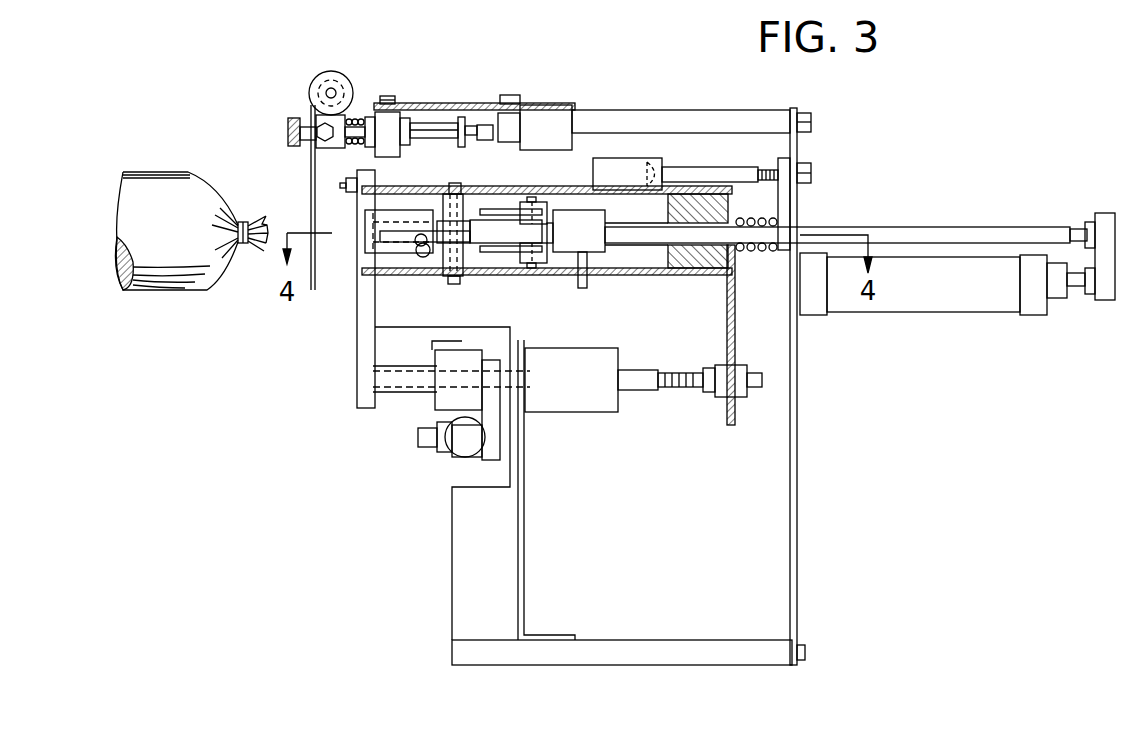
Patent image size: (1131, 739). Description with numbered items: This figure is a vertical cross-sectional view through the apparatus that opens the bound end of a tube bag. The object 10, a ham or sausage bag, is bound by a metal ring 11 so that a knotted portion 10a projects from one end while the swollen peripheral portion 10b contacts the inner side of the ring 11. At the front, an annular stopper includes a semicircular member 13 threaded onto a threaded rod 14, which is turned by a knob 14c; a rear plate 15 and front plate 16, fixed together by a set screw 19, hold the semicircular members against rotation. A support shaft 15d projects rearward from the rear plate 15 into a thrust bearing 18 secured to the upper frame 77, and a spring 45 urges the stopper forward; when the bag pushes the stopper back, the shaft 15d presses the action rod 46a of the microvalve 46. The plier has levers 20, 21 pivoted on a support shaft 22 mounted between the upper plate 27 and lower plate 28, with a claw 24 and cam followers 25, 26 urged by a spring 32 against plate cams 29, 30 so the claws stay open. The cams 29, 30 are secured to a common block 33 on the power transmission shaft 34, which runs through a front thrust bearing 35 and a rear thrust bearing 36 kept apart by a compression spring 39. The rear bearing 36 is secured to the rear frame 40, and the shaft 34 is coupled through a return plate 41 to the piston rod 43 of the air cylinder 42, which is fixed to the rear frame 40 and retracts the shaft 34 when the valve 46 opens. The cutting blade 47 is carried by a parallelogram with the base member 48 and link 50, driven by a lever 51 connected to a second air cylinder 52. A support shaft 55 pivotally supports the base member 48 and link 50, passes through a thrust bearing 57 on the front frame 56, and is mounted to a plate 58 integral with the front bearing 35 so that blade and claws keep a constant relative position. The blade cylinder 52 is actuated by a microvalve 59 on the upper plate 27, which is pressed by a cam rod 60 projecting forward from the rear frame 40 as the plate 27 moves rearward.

The object 10 is at (167, 188).
The knotted portion 10a is at (262, 218).
The peripheral portion 10b is at (210, 187).
The metal ring 11 is at (243, 243).
The semicircular member 13 is at (312, 290).
The threaded rod 14 is at (312, 88).
The knob 14c is at (331, 71).
The rear plate 15 is at (325, 148).
The support shaft 15d is at (432, 122).
The front plate 16 is at (310, 150).
The thrust bearing 18 is at (388, 157).
The set screw 19 is at (288, 130).
The lever 20 is at (473, 220).
The lever 21 is at (455, 276).
The support shaft 22 is at (457, 186).
The claw 24 is at (365, 240).
The cam follower 25 is at (543, 202).
The cam follower 26 is at (537, 268).
The upper plate 27 is at (425, 186).
The lower plate 28 is at (432, 276).
The plate cam 29 is at (507, 209).
The plate cam 30 is at (510, 252).
The spring 32 is at (415, 252).
The common block 33 is at (598, 252).
The power transmission shaft 34 is at (948, 227).
The front thrust bearing 35 is at (696, 262).
The rear thrust bearing 36 is at (790, 205).
The compression spring 39 is at (745, 250).
The rear frame 40 is at (797, 350).
The return plate 41 is at (1100, 213).
The air cylinder 42 is at (925, 300).
The piston rod 43 is at (1068, 285).
The spring 45 is at (357, 118).
The microvalve 46 is at (562, 105).
The action rod 46a is at (510, 96).
The cutting blade 47 is at (316, 233).
The base member 48 is at (435, 355).
The link 50 is at (357, 355).
The lever 51 is at (500, 432).
The air cylinder 52 is at (458, 460).
The support shaft 55 is at (393, 380).
The front frame 56 is at (524, 484).
The thrust bearing 57 is at (593, 412).
The plate 58 is at (735, 320).
The microvalve 59 is at (628, 175).
The cam rod 60 is at (693, 167).
The upper frame 77 is at (472, 103).